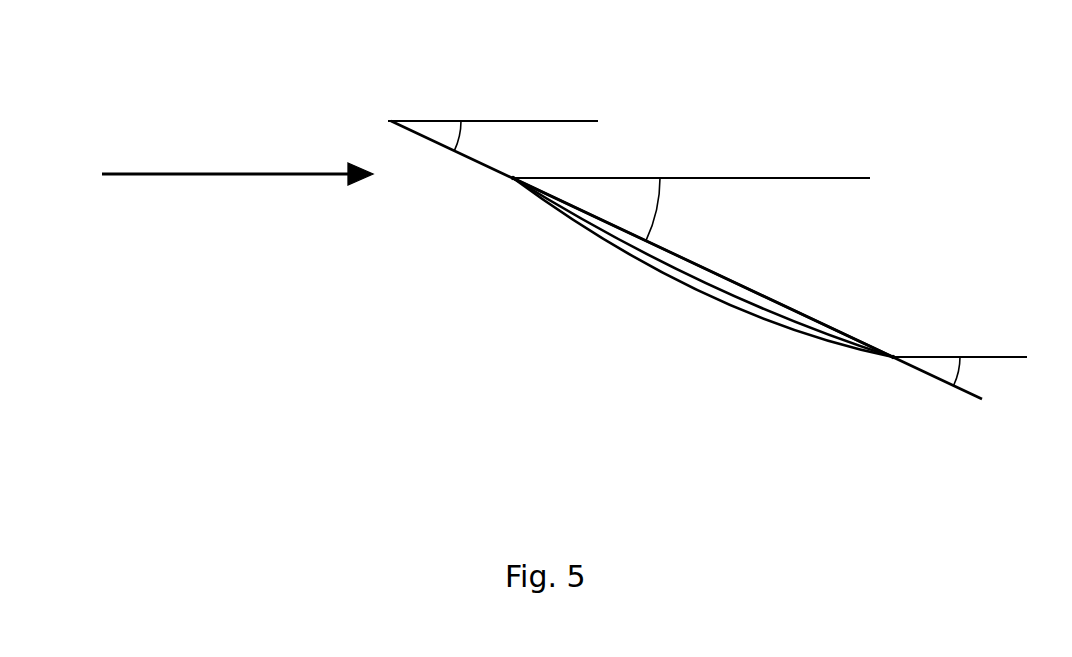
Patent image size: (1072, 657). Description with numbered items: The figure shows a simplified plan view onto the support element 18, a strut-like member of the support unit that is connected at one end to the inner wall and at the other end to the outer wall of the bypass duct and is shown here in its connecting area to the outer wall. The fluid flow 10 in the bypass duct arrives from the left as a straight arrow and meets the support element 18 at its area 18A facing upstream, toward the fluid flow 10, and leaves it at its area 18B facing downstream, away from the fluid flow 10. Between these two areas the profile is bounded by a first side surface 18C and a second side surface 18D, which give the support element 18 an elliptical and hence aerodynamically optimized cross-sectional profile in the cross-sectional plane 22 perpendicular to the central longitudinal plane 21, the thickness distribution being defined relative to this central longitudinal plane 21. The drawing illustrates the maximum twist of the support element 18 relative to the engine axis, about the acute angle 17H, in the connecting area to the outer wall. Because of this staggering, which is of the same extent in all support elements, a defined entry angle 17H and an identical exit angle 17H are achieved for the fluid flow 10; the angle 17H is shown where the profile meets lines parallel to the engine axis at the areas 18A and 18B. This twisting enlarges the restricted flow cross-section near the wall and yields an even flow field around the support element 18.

The fluid flow 10 is at (237, 177).
The negative acute angle 17H is at (421, 130).
The support element 18 is at (686, 290).
The area facing upstream 18A is at (508, 185).
The area facing downstream 18B is at (893, 358).
The first side surface 18C is at (736, 270).
The second side surface 18D is at (655, 282).
The central longitudinal plane 21 is at (802, 310).
The cross-sectional plane 22 is at (733, 295).